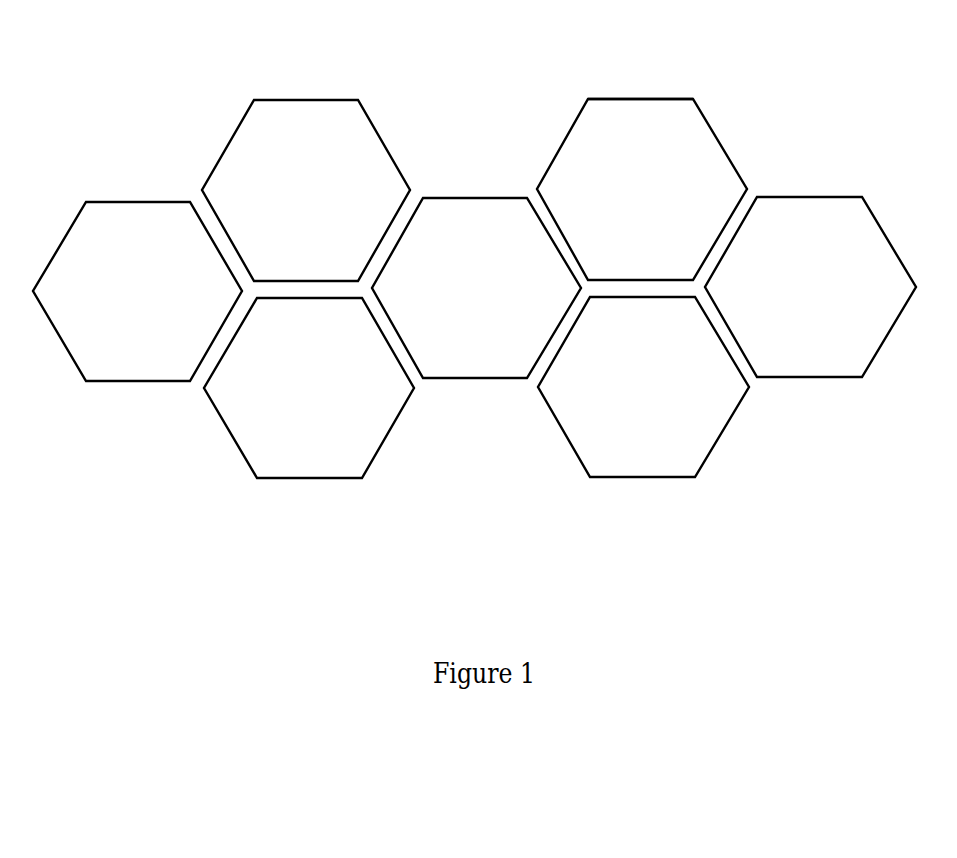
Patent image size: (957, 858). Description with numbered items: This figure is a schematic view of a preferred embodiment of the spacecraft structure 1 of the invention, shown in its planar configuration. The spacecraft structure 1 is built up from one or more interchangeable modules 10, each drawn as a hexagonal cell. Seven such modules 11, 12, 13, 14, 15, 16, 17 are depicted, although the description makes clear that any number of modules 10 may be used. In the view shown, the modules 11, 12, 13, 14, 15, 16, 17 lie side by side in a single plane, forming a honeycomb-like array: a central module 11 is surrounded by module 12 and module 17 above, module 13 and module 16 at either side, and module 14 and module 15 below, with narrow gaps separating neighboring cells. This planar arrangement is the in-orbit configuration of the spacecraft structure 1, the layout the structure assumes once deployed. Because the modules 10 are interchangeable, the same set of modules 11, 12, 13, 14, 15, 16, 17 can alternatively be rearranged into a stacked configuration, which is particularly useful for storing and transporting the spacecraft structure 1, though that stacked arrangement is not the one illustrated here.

The spacecraft structure 1 is at (495, 53).
The interchangeable module 10 is at (643, 99).
The module 11 is at (478, 378).
The module 12 is at (233, 137).
The module 13 is at (137, 381).
The module 14 is at (315, 478).
The module 15 is at (648, 477).
The module 16 is at (818, 377).
The module 17 is at (563, 140).